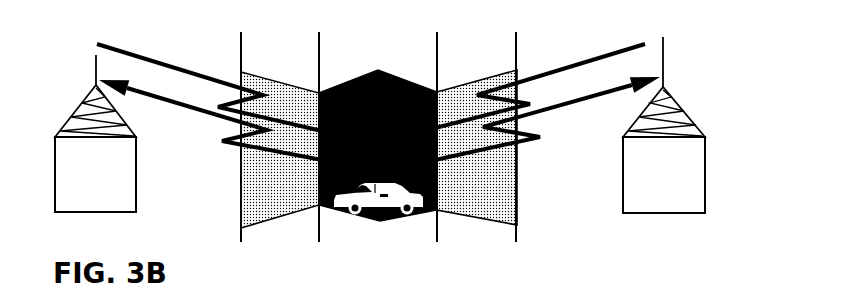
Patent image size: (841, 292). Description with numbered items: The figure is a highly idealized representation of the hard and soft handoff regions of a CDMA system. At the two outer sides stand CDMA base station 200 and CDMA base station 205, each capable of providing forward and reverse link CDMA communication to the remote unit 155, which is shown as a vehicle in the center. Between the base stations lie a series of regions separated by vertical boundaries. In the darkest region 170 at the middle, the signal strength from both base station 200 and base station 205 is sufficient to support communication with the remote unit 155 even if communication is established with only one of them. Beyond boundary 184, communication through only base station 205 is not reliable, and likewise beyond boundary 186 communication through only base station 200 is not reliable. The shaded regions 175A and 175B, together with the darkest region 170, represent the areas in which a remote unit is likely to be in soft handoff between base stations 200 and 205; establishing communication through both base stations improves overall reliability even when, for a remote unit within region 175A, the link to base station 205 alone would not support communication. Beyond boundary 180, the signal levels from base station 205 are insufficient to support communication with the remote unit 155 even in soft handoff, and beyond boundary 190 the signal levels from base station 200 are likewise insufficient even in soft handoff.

The remote unit 155 is at (378, 225).
The darkest region 170 is at (388, 70).
The soft handoff region 175A is at (242, 228).
The soft handoff region 175B is at (511, 224).
The boundary 180 is at (241, 53).
The boundary 184 is at (319, 50).
The boundary 186 is at (437, 50).
The boundary 190 is at (516, 50).
The CDMA base station 200 is at (80, 105).
The CDMA base station 205 is at (682, 110).